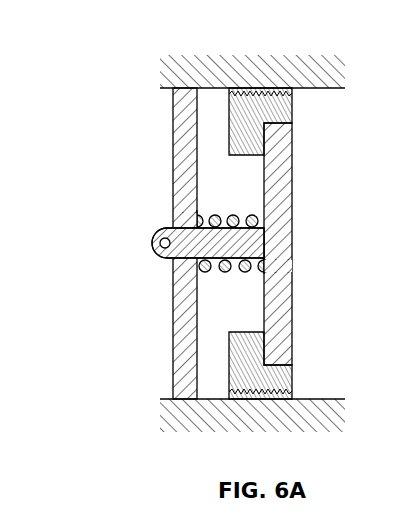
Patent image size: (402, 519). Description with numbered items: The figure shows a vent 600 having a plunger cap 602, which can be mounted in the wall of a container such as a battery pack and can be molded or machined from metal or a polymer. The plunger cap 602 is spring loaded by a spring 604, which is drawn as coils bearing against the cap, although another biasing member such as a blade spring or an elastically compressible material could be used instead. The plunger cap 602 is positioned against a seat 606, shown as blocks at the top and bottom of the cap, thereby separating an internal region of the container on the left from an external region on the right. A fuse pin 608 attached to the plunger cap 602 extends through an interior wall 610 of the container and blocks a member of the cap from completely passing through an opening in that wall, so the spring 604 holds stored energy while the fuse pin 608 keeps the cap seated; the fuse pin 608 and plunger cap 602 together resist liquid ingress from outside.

The vent 600 is at (232, 224).
The plunger cap 602 is at (292, 208).
The spring 604 is at (232, 214).
The seat 606 is at (292, 112).
The fuse pin 608 is at (153, 241).
The interior wall 610 is at (173, 147).